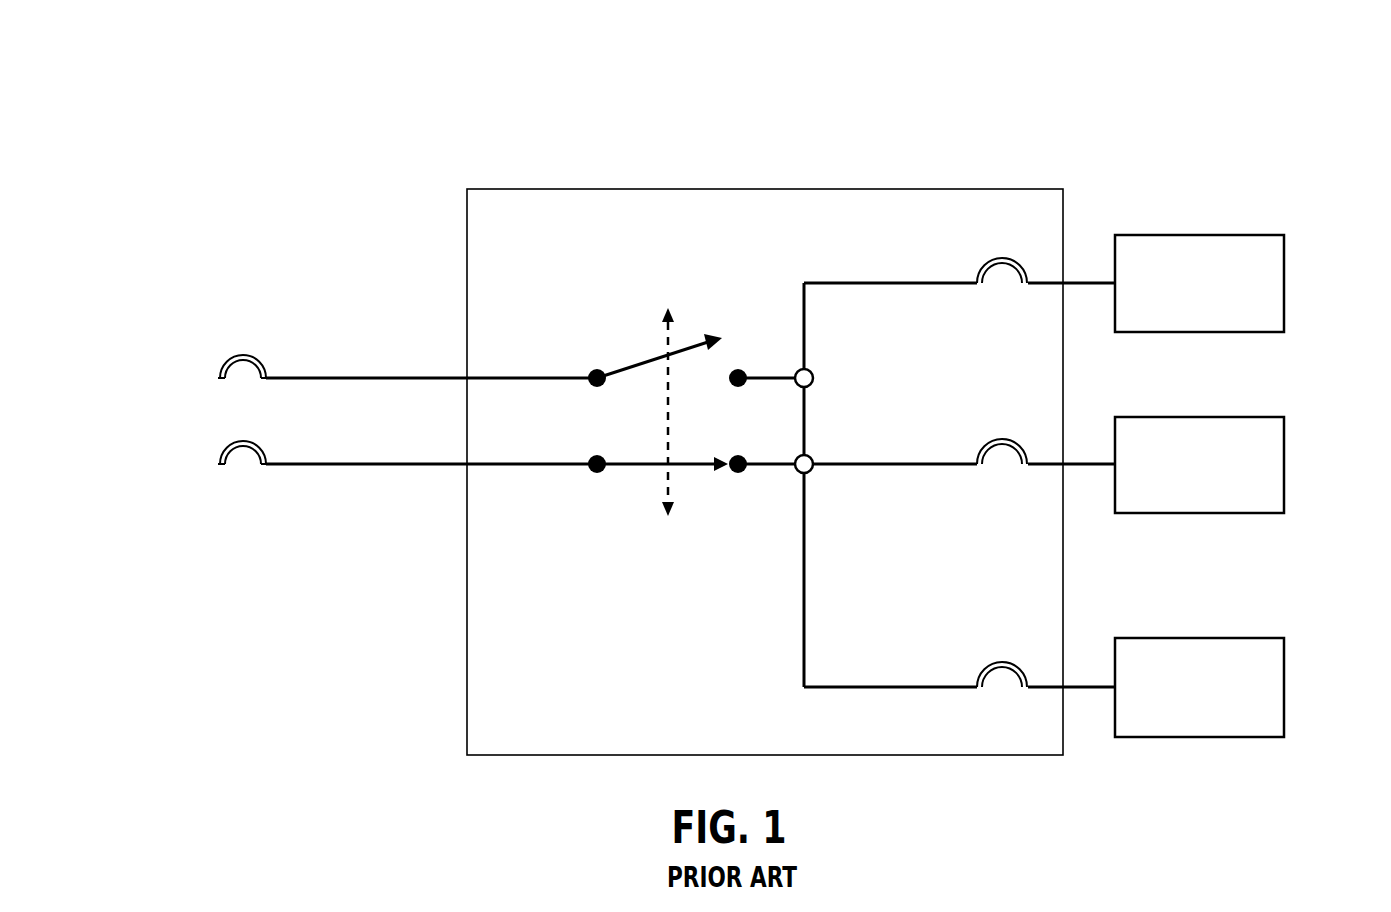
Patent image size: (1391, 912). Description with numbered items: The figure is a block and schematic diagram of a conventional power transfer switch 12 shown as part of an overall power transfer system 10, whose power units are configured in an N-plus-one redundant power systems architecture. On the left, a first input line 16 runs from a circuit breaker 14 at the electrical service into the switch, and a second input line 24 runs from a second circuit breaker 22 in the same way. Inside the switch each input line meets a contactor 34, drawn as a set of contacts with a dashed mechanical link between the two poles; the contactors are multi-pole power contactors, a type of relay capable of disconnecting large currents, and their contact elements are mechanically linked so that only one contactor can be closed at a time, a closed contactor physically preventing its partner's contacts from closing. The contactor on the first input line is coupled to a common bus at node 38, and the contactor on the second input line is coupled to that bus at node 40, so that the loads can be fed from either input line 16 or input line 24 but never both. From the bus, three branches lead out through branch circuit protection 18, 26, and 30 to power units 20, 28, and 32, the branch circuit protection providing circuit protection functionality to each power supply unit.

The power transfer system 10 is at (1232, 86).
The power transfer switch 12 is at (642, 189).
The circuit breaker 14 is at (240, 357).
The first input line 16 is at (330, 380).
The branch circuit protection 18 is at (1007, 258).
The power unit 20 is at (1286, 280).
The circuit breaker 22 is at (245, 443).
The second input line 24 is at (330, 466).
The branch circuit protection 26 is at (1010, 441).
The power unit 28 is at (1286, 463).
The branch circuit protection 30 is at (1010, 662).
The power unit 32 is at (1286, 688).
The contactor 34 is at (685, 343).
The node 38 is at (815, 377).
The node 40 is at (815, 464).